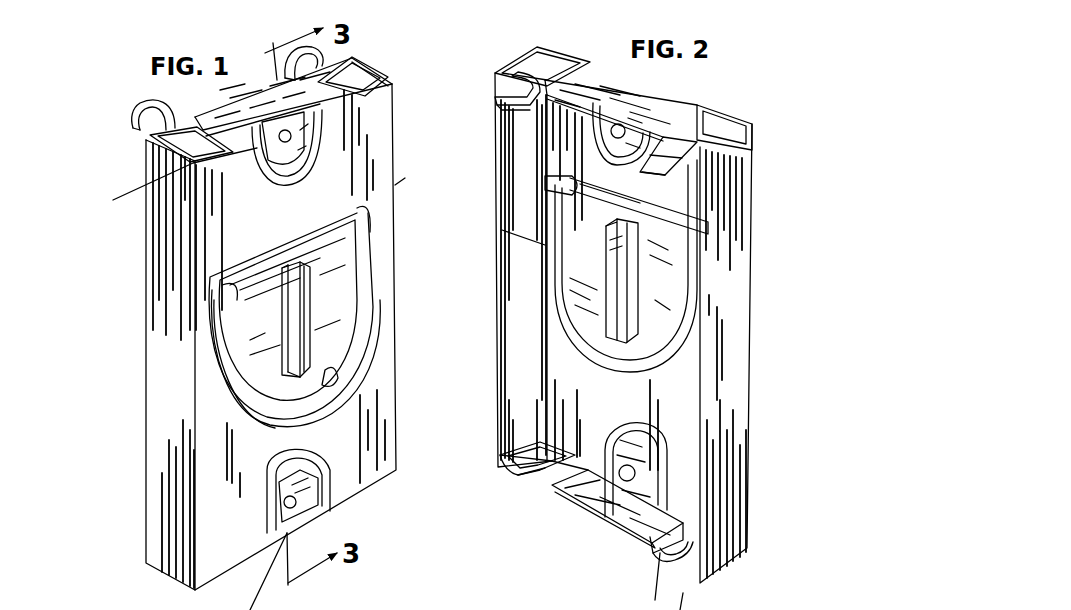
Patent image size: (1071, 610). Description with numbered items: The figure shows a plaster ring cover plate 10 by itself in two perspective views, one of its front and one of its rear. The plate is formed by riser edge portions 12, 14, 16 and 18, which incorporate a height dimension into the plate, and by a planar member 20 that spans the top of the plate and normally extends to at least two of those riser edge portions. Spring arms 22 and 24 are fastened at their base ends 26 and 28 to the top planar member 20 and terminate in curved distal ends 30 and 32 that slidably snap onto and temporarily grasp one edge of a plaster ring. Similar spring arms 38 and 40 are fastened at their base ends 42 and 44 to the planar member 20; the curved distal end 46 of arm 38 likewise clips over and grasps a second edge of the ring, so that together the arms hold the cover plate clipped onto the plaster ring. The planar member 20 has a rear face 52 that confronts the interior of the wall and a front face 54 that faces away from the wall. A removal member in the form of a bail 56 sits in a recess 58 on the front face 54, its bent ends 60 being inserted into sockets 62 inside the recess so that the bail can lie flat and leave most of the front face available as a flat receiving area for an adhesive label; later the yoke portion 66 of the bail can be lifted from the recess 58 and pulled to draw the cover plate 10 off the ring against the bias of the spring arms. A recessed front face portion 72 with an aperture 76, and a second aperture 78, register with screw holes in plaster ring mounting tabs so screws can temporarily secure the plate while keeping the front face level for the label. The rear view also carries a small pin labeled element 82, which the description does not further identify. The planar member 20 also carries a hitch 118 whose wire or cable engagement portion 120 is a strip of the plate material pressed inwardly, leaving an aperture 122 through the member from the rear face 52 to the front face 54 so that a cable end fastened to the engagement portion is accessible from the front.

In FIG. 1, the plaster ring cover plate 10 is at (122, 437).
In FIG. 1, the riser edge portion 12 is at (157, 515).
In FIG. 2, the riser edge portion 12 is at (733, 433).
In FIG. 2, the riser edge portion 14 is at (512, 235).
In FIG. 2, the riser edge portion 16 is at (630, 530).
In FIG. 1, the riser edge portion 18 is at (247, 112).
In FIG. 2, the riser edge portion 18 is at (613, 90).
In FIG. 1, the planar member 20 is at (247, 223).
In FIG. 2, the spring arm 22 is at (503, 62).
In FIG. 2, the spring arm 24 is at (703, 115).
In FIG. 2, the base end 26 is at (560, 53).
In FIG. 2, the base end 28 is at (717, 110).
In FIG. 1, the curved distal end 30 is at (470, 114).
In FIG. 2, the curved distal end 32 is at (657, 168).
In FIG. 2, the spring arm 38 is at (540, 448).
In FIG. 2, the spring arm 40 is at (670, 535).
In FIG. 2, the base end 42 is at (563, 428).
In FIG. 2, the base end 44 is at (683, 480).
In FIG. 2, the curved distal end 46 is at (518, 477).
In FIG. 2, the rear face 52 is at (570, 390).
In FIG. 1, the front face 54 is at (358, 453).
In FIG. 1, the bail 56 is at (372, 216).
In FIG. 1, the recess 58 is at (333, 297).
In FIG. 1, the bent ends 60 is at (403, 180).
In FIG. 1, the sockets 62 is at (362, 200).
In FIG. 1, the yoke portion 66 is at (330, 382).
In FIG. 1, the recessed front face portion 72 is at (169, 158).
In FIG. 1, the aperture 76 is at (390, 80).
In FIG. 1, the aperture 78 is at (297, 503).
In FIG. 2, the pin 82 is at (560, 192).
In FIG. 1, the hitch 118 is at (305, 329).
In FIG. 2, the hitch 118 is at (630, 307).
In FIG. 2, the wire or cable engagement portion 120 is at (613, 283).
In FIG. 2, the aperture 122 is at (630, 260).